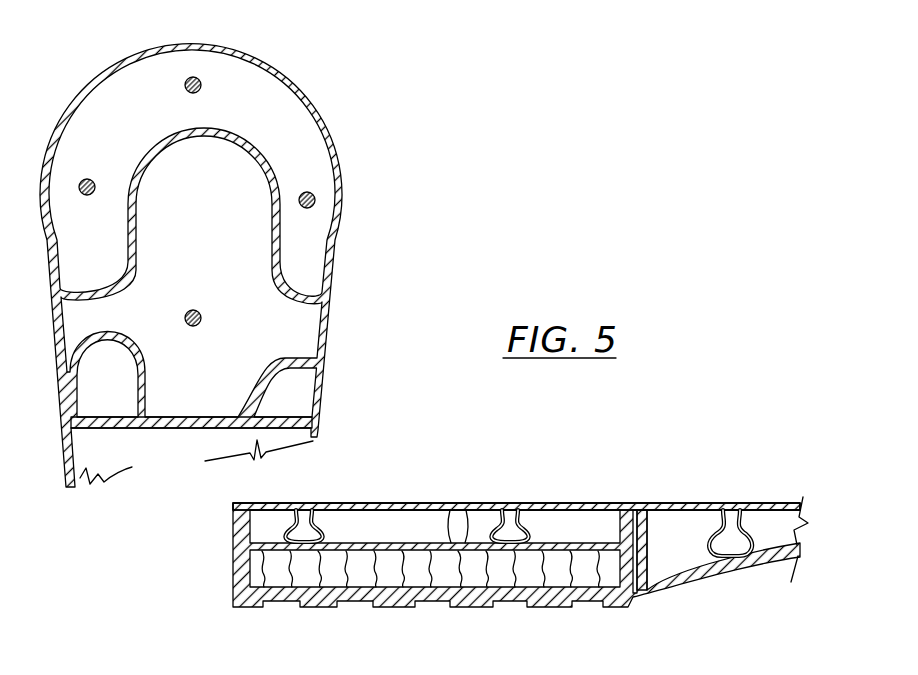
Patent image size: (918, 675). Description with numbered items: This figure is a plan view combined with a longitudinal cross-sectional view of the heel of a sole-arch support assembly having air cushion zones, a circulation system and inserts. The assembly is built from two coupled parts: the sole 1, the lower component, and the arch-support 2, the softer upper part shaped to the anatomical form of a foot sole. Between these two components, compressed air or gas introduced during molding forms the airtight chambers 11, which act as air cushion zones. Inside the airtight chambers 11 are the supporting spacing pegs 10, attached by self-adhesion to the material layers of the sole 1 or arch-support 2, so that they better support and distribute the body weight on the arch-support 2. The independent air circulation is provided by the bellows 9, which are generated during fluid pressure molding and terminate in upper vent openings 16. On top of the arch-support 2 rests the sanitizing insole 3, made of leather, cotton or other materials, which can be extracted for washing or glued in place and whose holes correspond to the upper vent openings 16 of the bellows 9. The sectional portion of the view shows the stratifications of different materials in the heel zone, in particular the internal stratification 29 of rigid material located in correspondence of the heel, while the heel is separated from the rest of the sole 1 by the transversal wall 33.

The sole 1 is at (470, 598).
The arch-support 2 is at (573, 509).
The sanitizing insole 3 is at (430, 499).
The bellows 9 is at (283, 531).
The spacing pegs 10 is at (191, 76).
The airtight chambers 11 is at (293, 145).
The upper vent openings 16 is at (738, 506).
The internal stratification 29 is at (323, 563).
The transversal wall 33 is at (181, 424).